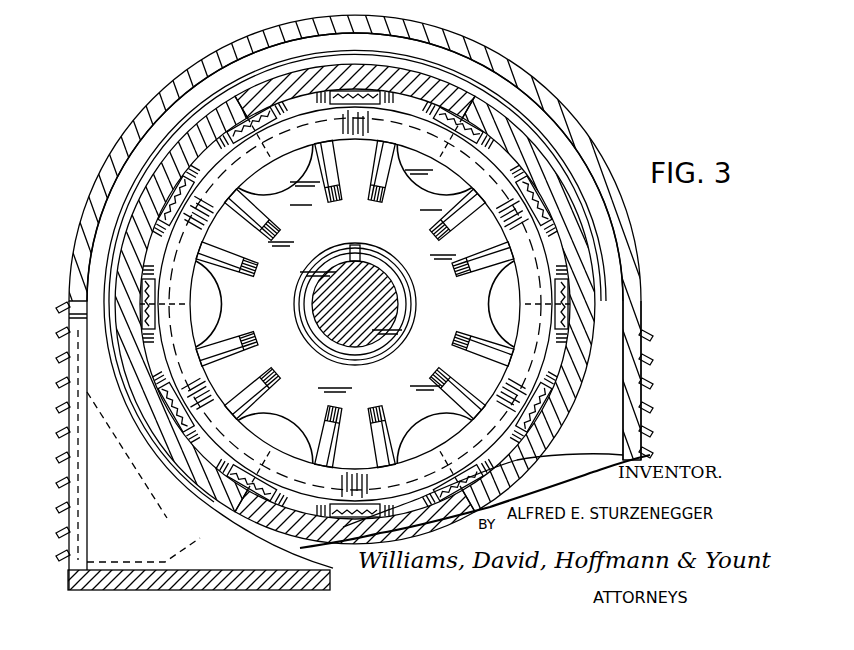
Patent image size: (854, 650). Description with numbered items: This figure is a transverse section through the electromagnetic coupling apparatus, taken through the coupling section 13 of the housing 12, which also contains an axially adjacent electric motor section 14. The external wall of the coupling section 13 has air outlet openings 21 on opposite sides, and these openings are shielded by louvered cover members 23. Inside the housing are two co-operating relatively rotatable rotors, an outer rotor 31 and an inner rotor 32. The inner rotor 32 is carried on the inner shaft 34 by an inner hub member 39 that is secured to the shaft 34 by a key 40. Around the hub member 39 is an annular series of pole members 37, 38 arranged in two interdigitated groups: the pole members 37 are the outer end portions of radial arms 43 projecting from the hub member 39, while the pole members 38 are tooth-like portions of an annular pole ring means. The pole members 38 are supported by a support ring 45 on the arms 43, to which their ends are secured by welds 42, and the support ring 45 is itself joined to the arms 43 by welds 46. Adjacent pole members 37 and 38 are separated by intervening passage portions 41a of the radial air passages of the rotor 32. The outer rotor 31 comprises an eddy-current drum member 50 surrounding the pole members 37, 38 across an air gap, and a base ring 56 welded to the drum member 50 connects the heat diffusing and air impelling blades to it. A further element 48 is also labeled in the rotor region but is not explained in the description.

The housing 12 is at (204, 51).
The coupling section 13 is at (582, 130).
The electric motor section 14 is at (600, 163).
The air outlet openings 21 is at (77, 326).
The bolts 23 is at (71, 422).
The outer rotor 31 is at (181, 119).
The inner rotor 32 is at (217, 295).
The shaft 34 is at (380, 292).
The pole members 37 is at (408, 100).
The pole members 38 is at (405, 193).
The inner hub member 39 is at (300, 345).
The key 40 is at (357, 250).
The intervening passage portions 41a is at (305, 53).
The welds 42 is at (470, 87).
The radial arms 43 is at (458, 34).
The support ring 45 is at (537, 257).
The welds 46 is at (358, 87).
The end windings 48 is at (240, 256).
The eddy-current drum member 50 is at (509, 127).
The base ring 56 is at (540, 135).